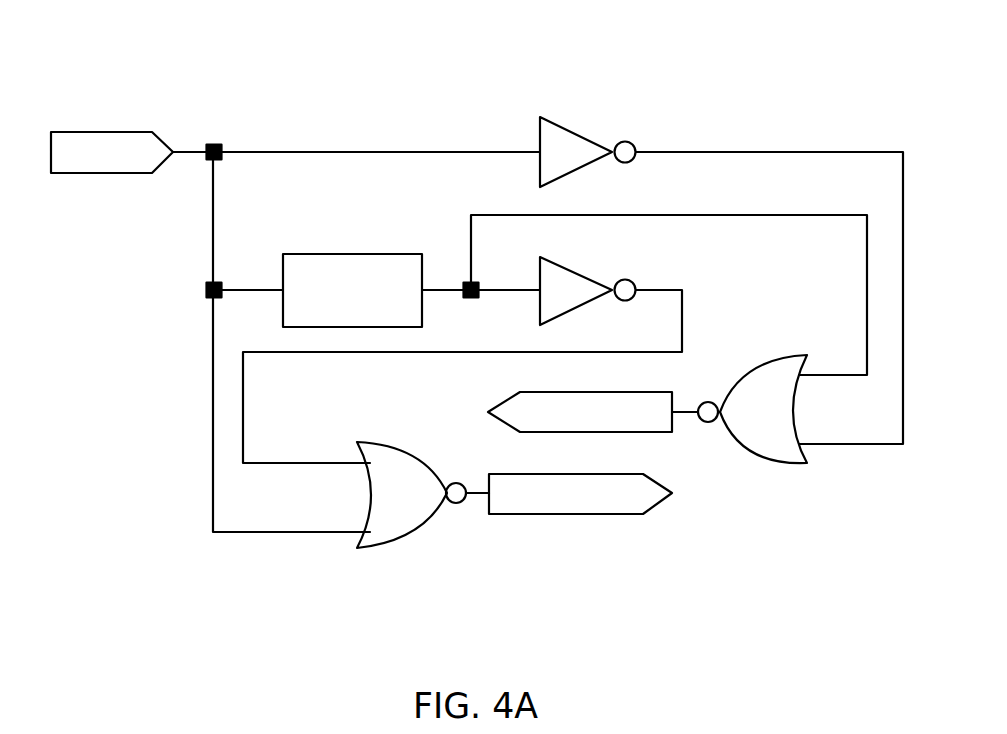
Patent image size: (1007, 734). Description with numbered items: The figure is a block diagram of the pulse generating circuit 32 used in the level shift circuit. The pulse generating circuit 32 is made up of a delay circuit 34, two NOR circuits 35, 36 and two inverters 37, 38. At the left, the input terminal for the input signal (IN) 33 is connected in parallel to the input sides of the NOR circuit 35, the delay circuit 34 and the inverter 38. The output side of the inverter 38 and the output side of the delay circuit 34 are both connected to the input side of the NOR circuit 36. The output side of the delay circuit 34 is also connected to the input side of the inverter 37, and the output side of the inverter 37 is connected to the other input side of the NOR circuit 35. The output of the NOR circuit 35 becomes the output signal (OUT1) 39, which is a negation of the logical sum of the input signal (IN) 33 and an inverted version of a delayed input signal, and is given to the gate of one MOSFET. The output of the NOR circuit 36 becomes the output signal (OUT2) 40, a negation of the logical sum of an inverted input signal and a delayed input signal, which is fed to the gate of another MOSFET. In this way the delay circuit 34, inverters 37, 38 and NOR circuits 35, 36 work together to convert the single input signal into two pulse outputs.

The pulse generating circuit 32 is at (811, 82).
The input terminal for the input signal (IN) 33 is at (98, 132).
The delay circuit 34 is at (355, 254).
The NOR circuit 35 is at (413, 447).
The NOR circuit 36 is at (757, 364).
The inverter 37 is at (579, 273).
The inverter 38 is at (578, 134).
The output signal (OUT1) 39 is at (565, 514).
The output signal (OUT2) 40 is at (505, 398).